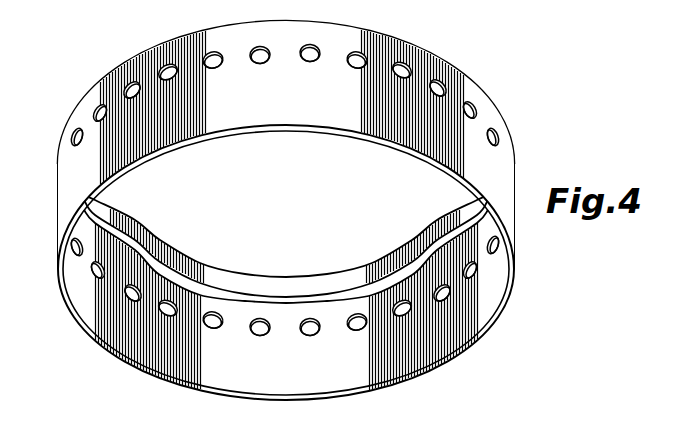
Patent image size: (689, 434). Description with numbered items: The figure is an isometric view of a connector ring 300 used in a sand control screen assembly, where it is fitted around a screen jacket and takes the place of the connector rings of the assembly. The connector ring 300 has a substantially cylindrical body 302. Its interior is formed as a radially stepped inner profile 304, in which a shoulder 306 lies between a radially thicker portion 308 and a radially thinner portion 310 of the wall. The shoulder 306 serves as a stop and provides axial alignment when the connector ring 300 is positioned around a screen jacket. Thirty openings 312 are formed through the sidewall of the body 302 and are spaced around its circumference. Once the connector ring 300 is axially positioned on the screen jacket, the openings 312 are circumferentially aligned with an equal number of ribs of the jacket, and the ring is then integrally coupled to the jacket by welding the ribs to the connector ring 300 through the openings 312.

The connector ring 300 is at (470, 50).
The substantially cylindrical body 302 is at (490, 106).
The radially stepped inner profile 304 is at (232, 372).
The shoulder 306 is at (227, 298).
The radially thicker portion 308 is at (331, 296).
The radially thinner portion 310 is at (349, 372).
The openings 312 is at (128, 84).